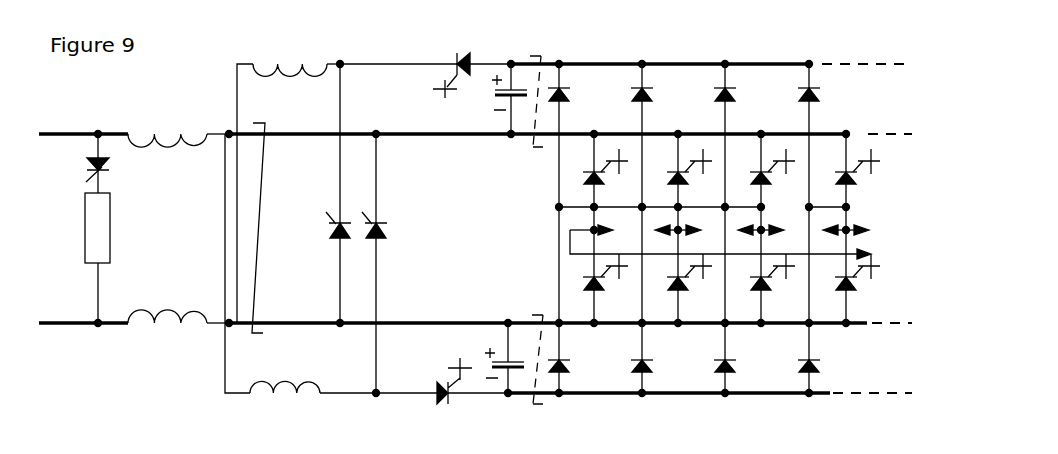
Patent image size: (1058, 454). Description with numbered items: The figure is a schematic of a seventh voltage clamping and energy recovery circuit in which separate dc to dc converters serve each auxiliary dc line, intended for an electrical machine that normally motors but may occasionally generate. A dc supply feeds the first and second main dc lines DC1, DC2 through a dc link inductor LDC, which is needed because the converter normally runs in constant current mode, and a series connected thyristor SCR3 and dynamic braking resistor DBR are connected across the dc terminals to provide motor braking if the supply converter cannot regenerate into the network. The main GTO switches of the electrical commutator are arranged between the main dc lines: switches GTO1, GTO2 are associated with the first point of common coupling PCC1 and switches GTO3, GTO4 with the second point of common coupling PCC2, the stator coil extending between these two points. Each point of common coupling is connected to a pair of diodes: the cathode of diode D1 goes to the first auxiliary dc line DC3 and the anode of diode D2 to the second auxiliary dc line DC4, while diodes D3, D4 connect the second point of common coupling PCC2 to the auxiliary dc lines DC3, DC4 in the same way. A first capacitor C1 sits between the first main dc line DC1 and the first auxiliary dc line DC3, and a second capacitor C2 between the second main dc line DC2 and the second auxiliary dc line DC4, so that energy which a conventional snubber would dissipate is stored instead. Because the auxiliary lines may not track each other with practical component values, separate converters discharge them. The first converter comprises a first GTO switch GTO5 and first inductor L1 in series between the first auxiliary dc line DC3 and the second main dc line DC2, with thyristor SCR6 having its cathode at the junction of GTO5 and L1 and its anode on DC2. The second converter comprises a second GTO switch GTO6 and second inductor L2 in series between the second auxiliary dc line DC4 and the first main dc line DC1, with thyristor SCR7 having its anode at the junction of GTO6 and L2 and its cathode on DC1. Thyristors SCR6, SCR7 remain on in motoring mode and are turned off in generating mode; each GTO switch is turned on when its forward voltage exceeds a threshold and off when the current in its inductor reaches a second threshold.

The first main dc line DC1 is at (475, 220).
The second main dc line DC2 is at (475, 337).
The first auxiliary dc line DC3 is at (626, 53).
The second auxiliary dc line DC4 is at (616, 409).
The dc link inductor LDC is at (167, 232).
The thyristor SCR3 is at (128, 163).
The dynamic braking resistor DBR is at (74, 258).
The first inductor L1 is at (288, 181).
The second inductor L2 is at (272, 263).
The thyristor SCR6 is at (308, 193).
The thyristor SCR7 is at (403, 263).
The first GTO switch GTO5 is at (430, 67).
The second GTO switch GTO6 is at (428, 381).
The first capacitor C1 is at (499, 99).
The second capacitor C2 is at (499, 350).
The diode D1 is at (568, 109).
The diode D2 is at (568, 377).
The diode D3 is at (652, 109).
The diode D4 is at (652, 377).
The switch GTO1 is at (594, 169).
The switch GTO2 is at (594, 285).
The switch GTO3 is at (677, 169).
The switch GTO4 is at (677, 285).
The first point of common coupling PCC1 is at (599, 218).
The second point of common coupling PCC2 is at (683, 218).